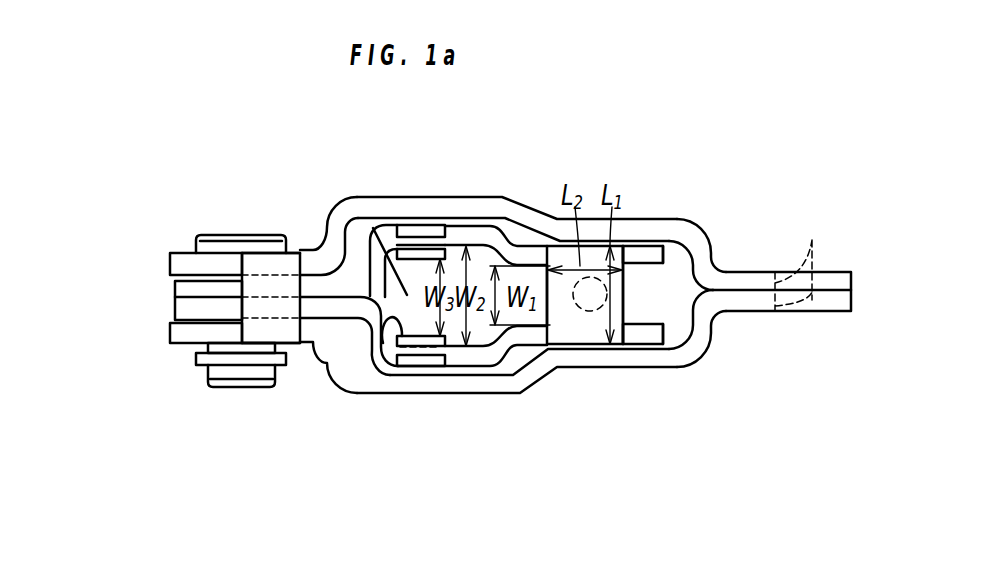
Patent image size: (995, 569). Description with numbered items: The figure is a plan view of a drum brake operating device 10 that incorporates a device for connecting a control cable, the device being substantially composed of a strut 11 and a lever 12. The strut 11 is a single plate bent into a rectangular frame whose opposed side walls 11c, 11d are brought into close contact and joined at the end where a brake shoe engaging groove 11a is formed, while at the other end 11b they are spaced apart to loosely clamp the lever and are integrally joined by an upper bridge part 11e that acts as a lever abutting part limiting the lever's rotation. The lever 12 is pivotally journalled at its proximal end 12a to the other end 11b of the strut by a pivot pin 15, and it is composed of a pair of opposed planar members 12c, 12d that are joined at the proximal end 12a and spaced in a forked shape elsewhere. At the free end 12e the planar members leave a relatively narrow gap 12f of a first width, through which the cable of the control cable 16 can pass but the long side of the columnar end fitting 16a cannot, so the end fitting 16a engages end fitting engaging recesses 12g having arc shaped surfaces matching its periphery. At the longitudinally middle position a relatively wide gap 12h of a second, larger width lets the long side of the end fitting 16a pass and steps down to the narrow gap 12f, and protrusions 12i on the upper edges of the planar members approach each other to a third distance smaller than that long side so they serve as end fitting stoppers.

The drum brake operating device 10 is at (185, 356).
The strut 11 is at (715, 343).
The brake shoe engaging groove 11a is at (782, 259).
The other end of the strut 11b is at (176, 264).
The side wall 11c is at (703, 246).
The side wall 11d is at (658, 357).
The upper bridge part 11e is at (298, 250).
The lever 12 is at (337, 324).
The proximal end of the lever 12a is at (188, 286).
The planar member 12c is at (508, 222).
The planar member 12d is at (519, 372).
The free end of the lever 12e is at (683, 238).
The gap 12f is at (652, 287).
The end fitting engaging recess 12g is at (621, 250).
The gap 12h is at (373, 228).
The protrusion 12i is at (429, 251).
The pivot pin 15 is at (241, 392).
The control cable 16 is at (590, 345).
The end fitting 16a is at (586, 321).